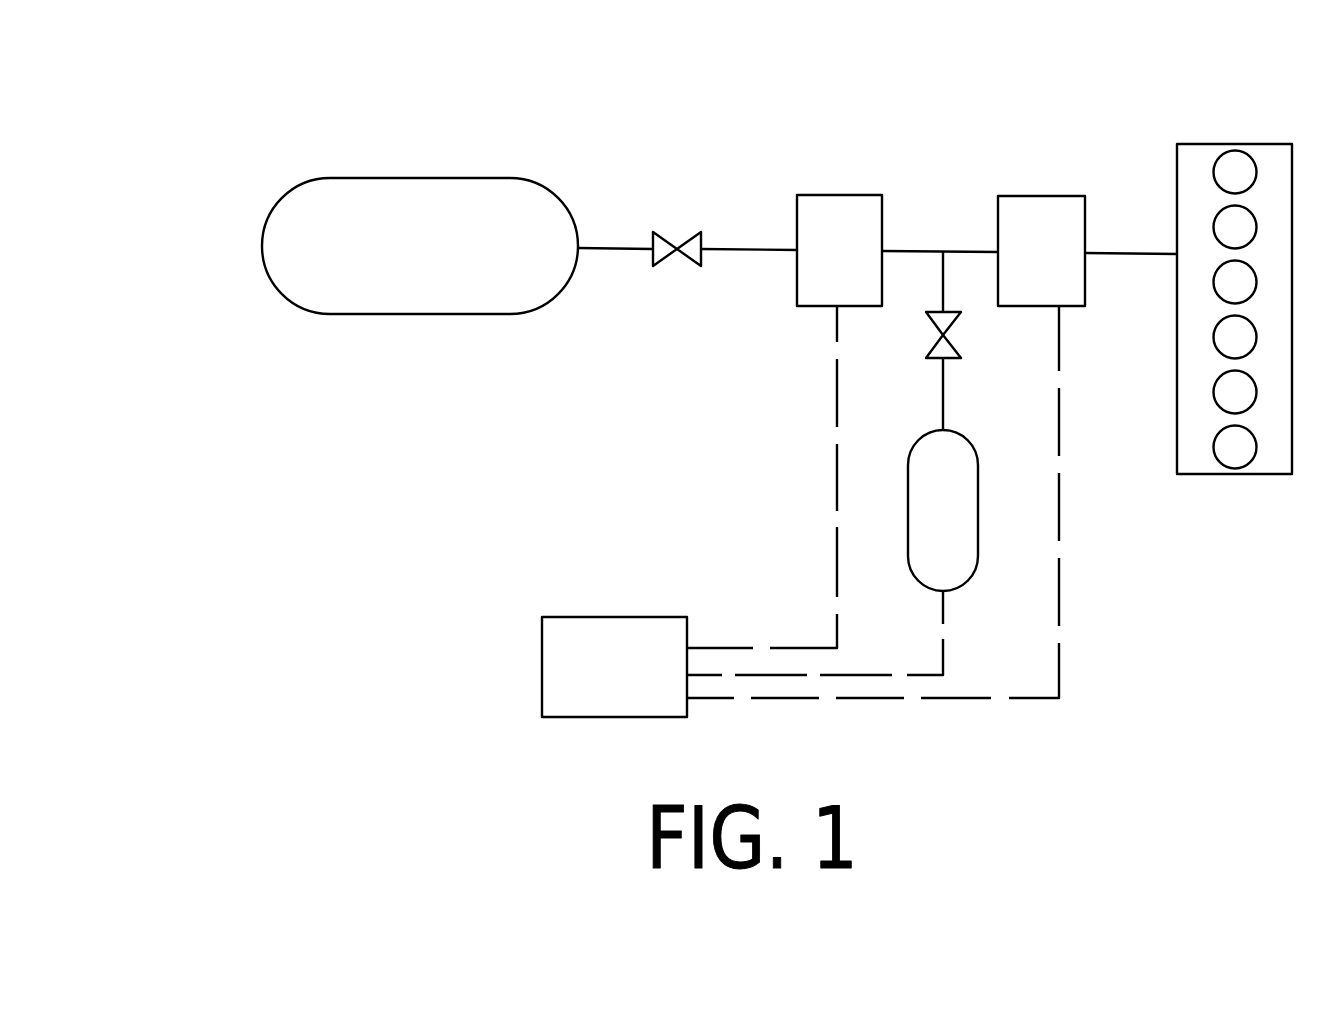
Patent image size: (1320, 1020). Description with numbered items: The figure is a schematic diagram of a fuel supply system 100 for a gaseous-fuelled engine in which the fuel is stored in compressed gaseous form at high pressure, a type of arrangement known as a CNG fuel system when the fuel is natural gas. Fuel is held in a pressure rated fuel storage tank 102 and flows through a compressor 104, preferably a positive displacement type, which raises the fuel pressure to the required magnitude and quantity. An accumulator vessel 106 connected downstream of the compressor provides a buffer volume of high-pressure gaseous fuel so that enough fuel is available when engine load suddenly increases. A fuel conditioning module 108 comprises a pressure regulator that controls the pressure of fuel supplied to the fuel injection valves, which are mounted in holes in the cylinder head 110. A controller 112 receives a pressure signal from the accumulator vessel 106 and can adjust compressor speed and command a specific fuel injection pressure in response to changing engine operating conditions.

The fuel supply system 100 is at (390, 110).
The fuel storage tank 102 is at (440, 263).
The compressor 104 is at (827, 258).
The accumulator vessel 106 is at (947, 520).
The fuel conditioning module 108 is at (1032, 230).
The cylinder head 110 is at (1200, 215).
The controller 112 is at (613, 668).